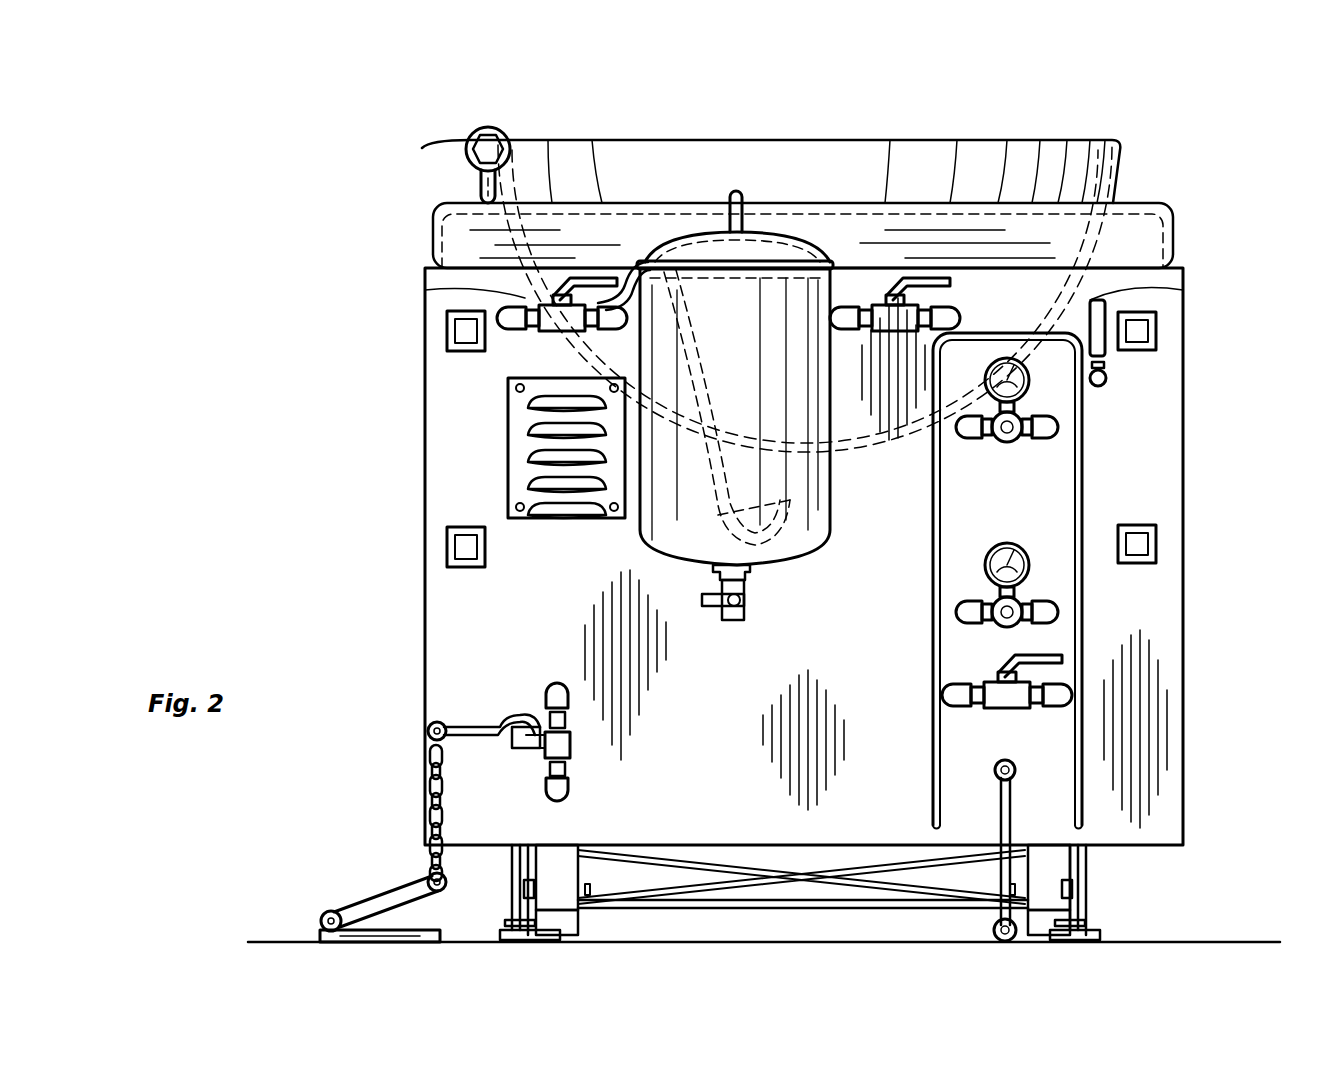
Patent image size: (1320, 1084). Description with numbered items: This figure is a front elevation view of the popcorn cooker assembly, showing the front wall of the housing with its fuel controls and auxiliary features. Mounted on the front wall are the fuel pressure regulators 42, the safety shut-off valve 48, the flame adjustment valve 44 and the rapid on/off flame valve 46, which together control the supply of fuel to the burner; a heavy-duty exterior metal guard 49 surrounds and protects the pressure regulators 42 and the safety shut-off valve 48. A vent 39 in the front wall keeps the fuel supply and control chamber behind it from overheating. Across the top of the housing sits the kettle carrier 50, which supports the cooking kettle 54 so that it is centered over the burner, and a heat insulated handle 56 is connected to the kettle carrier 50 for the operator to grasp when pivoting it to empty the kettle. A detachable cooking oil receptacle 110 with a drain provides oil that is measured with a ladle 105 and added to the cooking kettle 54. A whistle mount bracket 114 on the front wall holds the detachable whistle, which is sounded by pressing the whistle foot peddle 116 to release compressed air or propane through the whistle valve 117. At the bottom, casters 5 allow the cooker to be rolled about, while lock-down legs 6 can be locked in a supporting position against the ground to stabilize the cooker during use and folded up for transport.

The casters 5 is at (548, 893).
The legs 6 is at (880, 888).
The vent 39 is at (508, 445).
The fuel pressure regulators 42 is at (1060, 420).
The flame adjustment valve 44 is at (940, 320).
The rapid on/off flame valve 46 is at (518, 305).
The safety shut-off valve 48 is at (1062, 690).
The exterior metal guard 49 is at (935, 642).
The kettle carrier 50 is at (1175, 240).
The cooking kettle 54 is at (900, 140).
The heat insulated handle 56 is at (465, 150).
The ladle 105 is at (713, 492).
The cooking oil receptacle 110 is at (793, 533).
The whistle mount bracket 114 is at (1100, 312).
The whistle foot peddle 116 is at (382, 892).
The whistle valve 117 is at (572, 742).